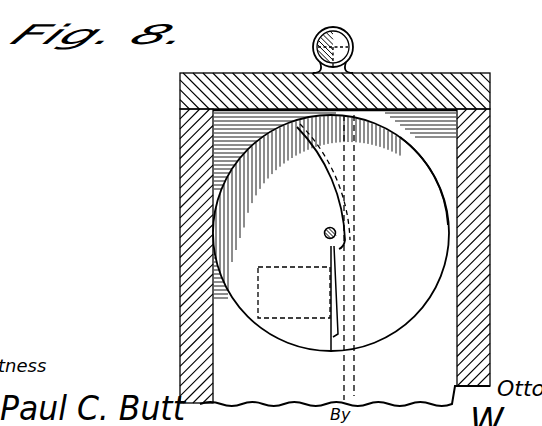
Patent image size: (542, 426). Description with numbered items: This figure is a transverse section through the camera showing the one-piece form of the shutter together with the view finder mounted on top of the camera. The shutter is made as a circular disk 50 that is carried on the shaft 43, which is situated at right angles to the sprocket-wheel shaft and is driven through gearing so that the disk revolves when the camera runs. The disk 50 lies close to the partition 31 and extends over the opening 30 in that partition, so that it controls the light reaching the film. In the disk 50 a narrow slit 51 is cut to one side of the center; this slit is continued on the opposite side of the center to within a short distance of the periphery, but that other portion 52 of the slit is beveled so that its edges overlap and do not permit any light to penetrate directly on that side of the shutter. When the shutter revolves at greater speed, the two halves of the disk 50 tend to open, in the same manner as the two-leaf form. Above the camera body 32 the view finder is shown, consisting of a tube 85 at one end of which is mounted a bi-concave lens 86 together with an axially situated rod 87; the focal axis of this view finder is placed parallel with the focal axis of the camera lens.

The opening 30 is at (271, 266).
The partition 31 is at (447, 176).
The housing 32 is at (441, 90).
The shaft 43 is at (324, 233).
The circular disk 50 is at (403, 315).
The narrow slit 51 is at (341, 331).
The beveled portion of the slit 52 is at (343, 182).
The tube 85 is at (352, 41).
The bi-concave lens 86 is at (314, 48).
The rod 87 is at (350, 51).